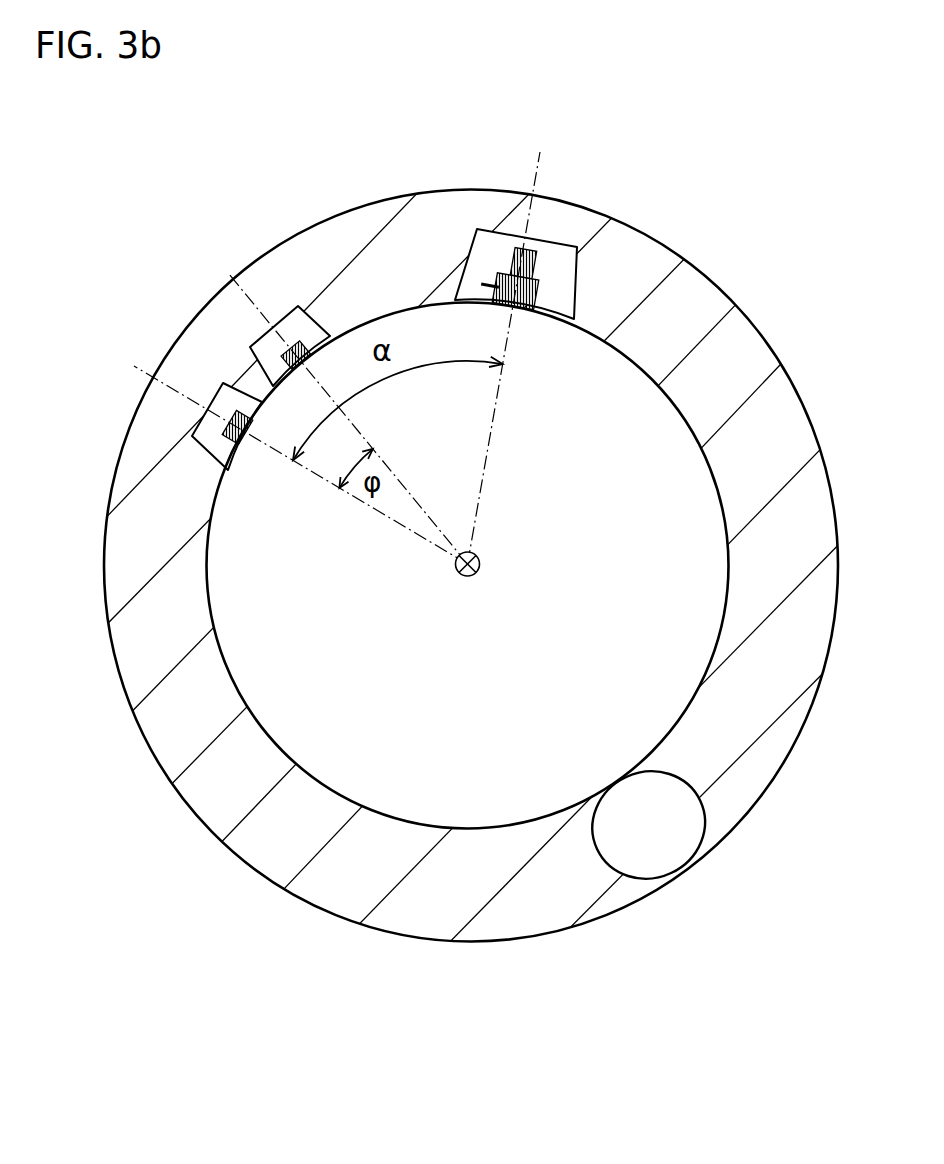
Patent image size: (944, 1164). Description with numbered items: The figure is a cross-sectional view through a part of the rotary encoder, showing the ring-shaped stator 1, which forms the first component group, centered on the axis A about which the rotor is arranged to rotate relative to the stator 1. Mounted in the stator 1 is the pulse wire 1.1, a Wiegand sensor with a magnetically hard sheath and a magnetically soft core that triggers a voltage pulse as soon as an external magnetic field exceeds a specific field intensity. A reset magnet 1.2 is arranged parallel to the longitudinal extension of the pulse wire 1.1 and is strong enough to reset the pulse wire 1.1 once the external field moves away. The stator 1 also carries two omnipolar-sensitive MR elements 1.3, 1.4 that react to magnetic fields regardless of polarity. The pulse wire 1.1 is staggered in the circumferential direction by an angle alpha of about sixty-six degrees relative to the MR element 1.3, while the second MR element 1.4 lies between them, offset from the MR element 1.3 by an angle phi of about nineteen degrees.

The stator 1 is at (216, 728).
The pulse wire 1.1 is at (531, 306).
The reset magnet 1.2 is at (527, 252).
The MR element 1.3 is at (224, 433).
The second MR element 1.4 is at (279, 358).
The axis A is at (477, 573).